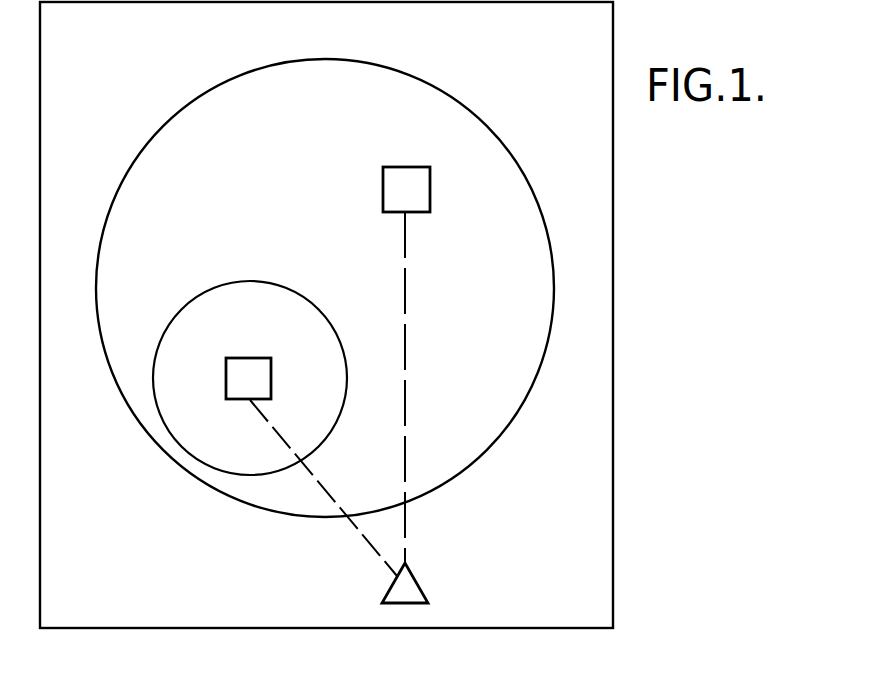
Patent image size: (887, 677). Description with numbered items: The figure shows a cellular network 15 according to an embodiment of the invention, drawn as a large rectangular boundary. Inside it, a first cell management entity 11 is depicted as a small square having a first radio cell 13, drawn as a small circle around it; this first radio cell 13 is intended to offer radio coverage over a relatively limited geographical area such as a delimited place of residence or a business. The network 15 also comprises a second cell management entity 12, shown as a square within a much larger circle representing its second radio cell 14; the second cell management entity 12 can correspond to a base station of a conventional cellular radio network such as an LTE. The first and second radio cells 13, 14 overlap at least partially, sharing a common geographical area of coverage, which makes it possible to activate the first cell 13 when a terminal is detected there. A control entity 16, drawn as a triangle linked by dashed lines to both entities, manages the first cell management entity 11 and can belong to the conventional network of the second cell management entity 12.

The first cell management entity 11 is at (252, 358).
The second cell management entity 12 is at (383, 200).
The first radio cell 13 is at (177, 315).
The second radio cell 14 is at (487, 122).
The cellular network 15 is at (613, 206).
The control entity 16 is at (421, 580).